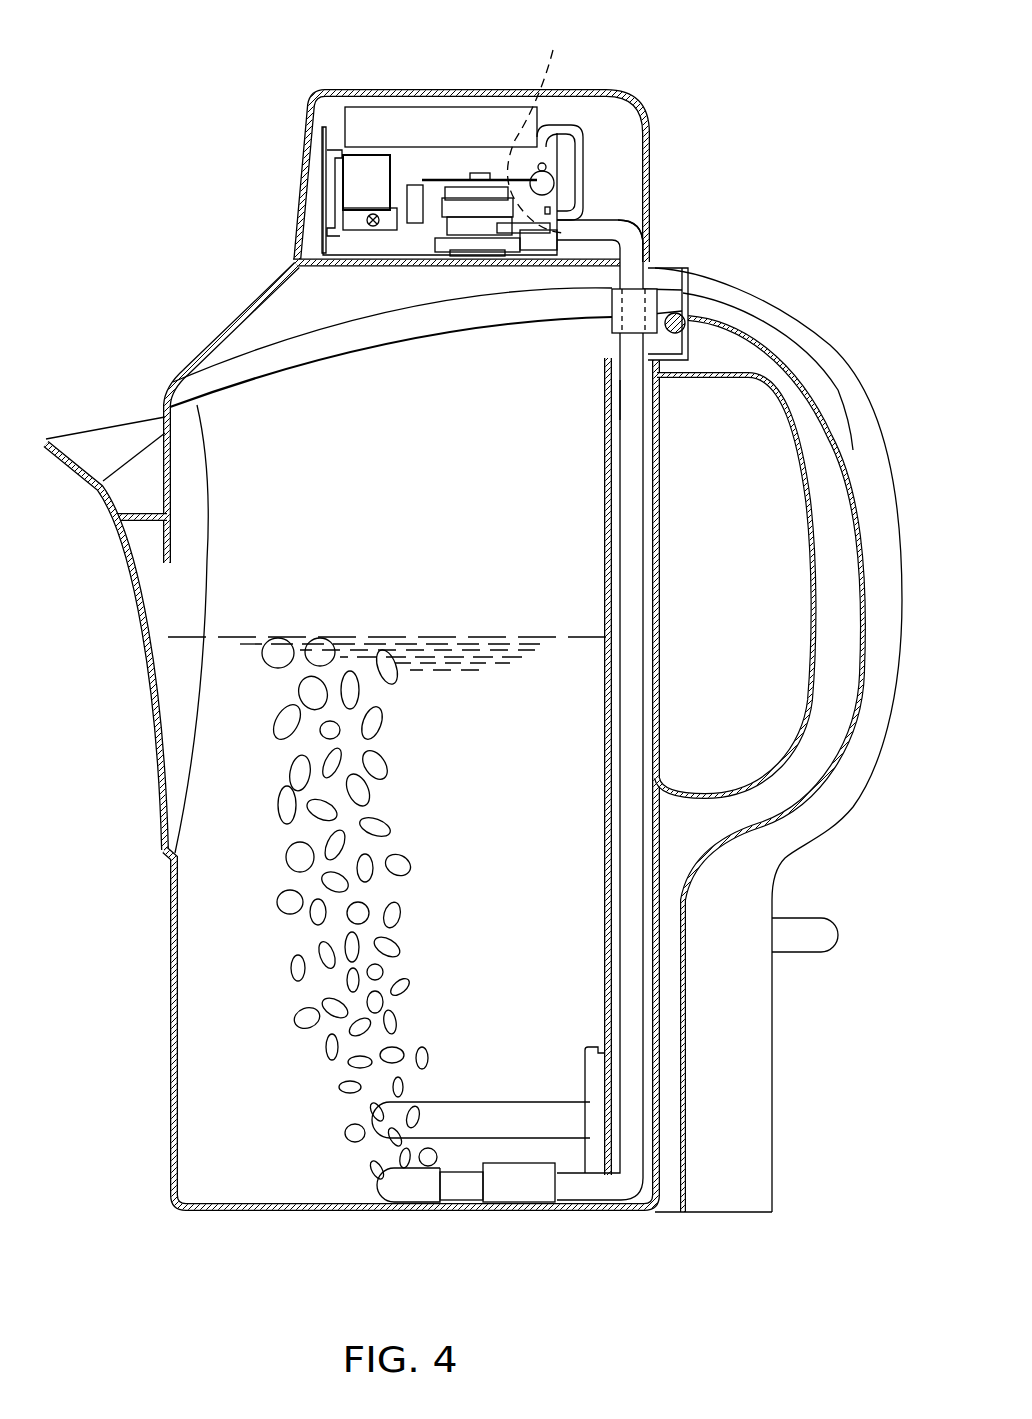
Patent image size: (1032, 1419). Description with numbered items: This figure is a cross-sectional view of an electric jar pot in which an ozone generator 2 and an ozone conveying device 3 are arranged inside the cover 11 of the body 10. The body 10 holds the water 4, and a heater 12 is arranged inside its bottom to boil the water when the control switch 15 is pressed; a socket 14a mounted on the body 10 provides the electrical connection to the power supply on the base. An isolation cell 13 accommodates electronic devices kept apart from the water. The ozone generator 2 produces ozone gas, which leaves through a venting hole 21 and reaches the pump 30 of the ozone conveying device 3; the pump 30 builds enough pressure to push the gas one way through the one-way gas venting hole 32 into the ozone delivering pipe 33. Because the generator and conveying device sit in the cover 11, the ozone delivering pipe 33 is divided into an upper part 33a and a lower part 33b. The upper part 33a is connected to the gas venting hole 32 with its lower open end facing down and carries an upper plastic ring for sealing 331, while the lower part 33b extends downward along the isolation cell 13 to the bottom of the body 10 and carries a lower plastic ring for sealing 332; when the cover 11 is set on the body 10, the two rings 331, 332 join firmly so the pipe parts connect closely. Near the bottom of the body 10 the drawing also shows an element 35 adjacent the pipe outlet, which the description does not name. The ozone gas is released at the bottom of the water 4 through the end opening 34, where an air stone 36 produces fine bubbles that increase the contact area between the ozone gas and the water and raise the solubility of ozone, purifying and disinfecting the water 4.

The ozone generator 2 is at (445, 120).
The ozone conveying device 3 is at (418, 178).
The water 4 is at (272, 760).
The body 10 is at (172, 878).
The cover 11 is at (213, 338).
The heater 12 is at (428, 1120).
The isolation cell 13 is at (607, 455).
The socket 14a is at (727, 1213).
The control switch 15 is at (802, 920).
The venting hole 21 is at (578, 147).
The pump 30 is at (465, 203).
The one-way gas venting hole 32 is at (548, 216).
The ozone delivering pipe 33 is at (632, 238).
The upper part 33a is at (638, 255).
The lower part 33b is at (633, 395).
The upper plastic ring for sealing 331 is at (640, 306).
The lower plastic ring for sealing 332 is at (733, 313).
The end opening 34 is at (442, 1183).
The air diffuser 35 is at (520, 1183).
The air stone 36 is at (393, 1183).